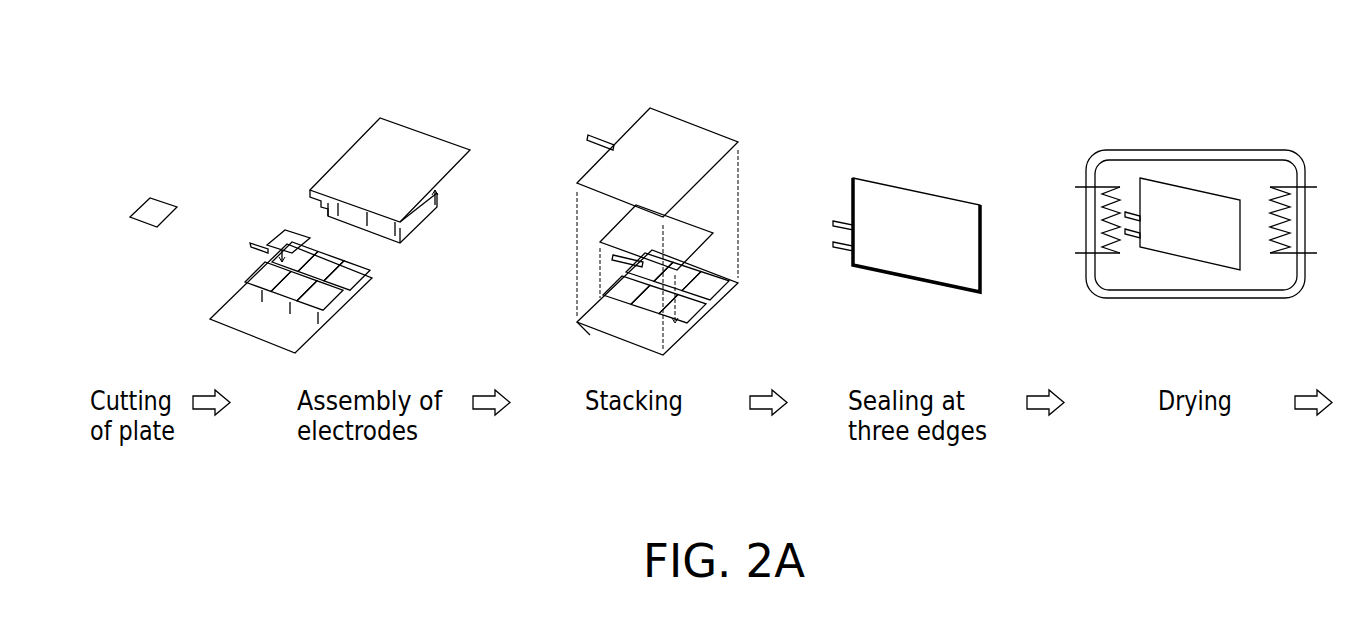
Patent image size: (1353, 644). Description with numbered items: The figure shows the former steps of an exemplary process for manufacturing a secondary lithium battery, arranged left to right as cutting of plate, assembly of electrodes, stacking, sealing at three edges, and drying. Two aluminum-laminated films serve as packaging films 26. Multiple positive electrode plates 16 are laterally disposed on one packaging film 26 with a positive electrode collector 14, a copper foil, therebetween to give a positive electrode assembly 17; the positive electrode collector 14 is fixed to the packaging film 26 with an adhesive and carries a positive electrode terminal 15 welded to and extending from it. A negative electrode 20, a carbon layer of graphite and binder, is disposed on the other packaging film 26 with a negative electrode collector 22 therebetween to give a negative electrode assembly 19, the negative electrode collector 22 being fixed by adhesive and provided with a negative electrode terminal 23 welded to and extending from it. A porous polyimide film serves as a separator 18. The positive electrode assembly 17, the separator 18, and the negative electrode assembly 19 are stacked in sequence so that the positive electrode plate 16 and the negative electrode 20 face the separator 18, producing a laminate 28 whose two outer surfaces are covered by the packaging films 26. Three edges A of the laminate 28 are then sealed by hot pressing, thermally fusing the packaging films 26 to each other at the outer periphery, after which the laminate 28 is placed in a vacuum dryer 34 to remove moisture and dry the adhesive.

The positive electrode collector 14 is at (292, 241).
The positive electrode terminal 15 is at (250, 245).
The positive electrode plate 16 is at (153, 200).
The positive electrode assembly 17 is at (593, 335).
The separator 18 is at (697, 233).
The negative electrode assembly 19 is at (662, 98).
The negative electrode 20 is at (413, 237).
The negative electrode collector 22 is at (420, 223).
The negative electrode terminal 23 is at (310, 194).
The packaging film 26 is at (423, 150).
The laminate 28 is at (948, 210).
The vacuum dryer 34 is at (1188, 294).
The edge A is at (852, 188).